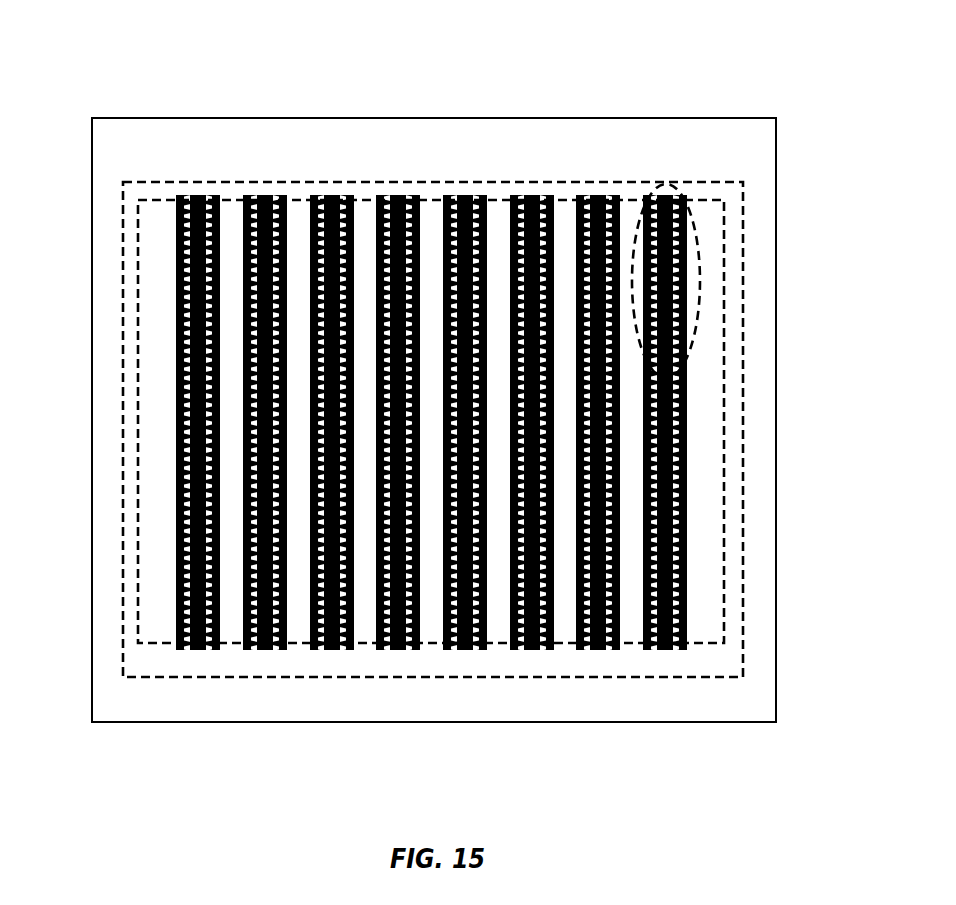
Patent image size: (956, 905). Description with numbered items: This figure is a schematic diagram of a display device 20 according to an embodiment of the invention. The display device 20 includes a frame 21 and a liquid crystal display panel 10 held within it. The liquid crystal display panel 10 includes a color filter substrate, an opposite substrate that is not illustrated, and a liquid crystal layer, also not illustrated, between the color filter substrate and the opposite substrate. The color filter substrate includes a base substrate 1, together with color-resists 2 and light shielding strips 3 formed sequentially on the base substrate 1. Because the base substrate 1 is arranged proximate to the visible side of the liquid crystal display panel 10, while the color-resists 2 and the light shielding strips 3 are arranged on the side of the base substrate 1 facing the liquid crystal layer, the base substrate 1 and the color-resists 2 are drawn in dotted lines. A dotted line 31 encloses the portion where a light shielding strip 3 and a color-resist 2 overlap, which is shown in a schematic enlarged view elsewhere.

The display device 20 is at (455, 79).
The frame 21 is at (290, 118).
The liquid crystal display panel 10 is at (390, 166).
The base substrate 1 is at (743, 227).
The color-resist 2 is at (704, 196).
The light shielding strip 3 is at (594, 193).
The dotted line 31 is at (697, 317).